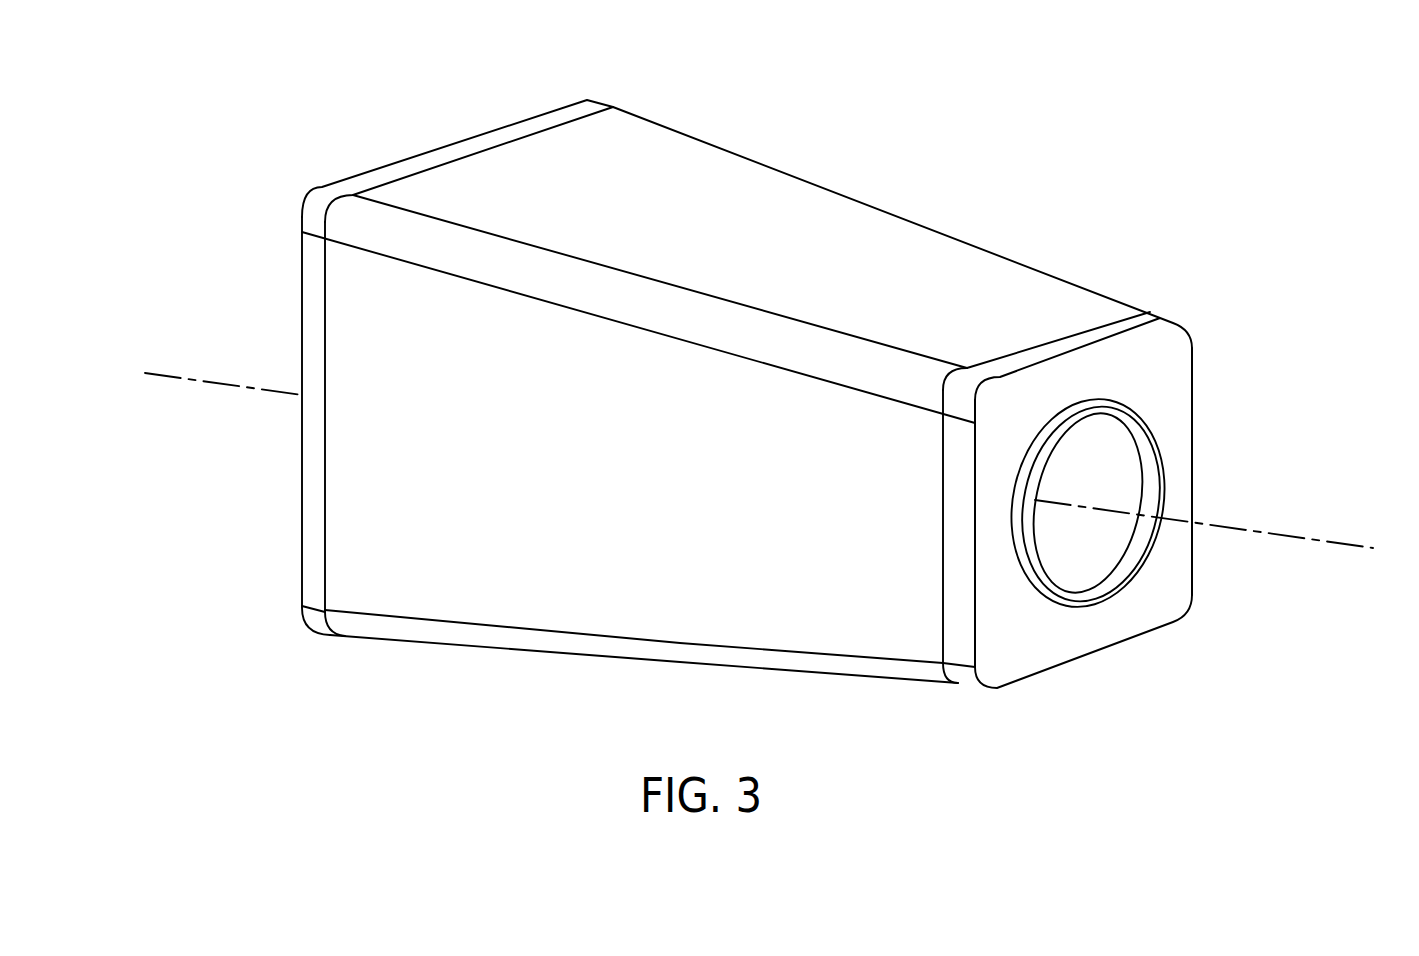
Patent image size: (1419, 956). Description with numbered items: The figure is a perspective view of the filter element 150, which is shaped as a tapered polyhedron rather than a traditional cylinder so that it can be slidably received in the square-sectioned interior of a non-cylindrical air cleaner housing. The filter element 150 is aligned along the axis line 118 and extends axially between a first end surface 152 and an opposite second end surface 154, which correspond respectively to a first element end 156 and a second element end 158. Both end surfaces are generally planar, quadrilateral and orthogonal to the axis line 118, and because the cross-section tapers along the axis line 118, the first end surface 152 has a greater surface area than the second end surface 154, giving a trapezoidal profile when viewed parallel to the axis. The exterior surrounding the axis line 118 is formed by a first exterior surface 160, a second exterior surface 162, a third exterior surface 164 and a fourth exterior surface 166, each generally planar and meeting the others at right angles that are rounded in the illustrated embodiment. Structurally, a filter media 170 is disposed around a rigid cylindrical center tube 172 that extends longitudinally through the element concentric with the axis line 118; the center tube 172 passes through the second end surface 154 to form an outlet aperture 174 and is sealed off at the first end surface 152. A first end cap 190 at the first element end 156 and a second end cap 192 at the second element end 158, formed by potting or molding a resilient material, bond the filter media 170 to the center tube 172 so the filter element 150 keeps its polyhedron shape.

The axis line 118 is at (1303, 537).
The filter element 150 is at (860, 177).
The first end surface 152 is at (302, 253).
The second end surface 154 is at (1192, 360).
The first element end 156 is at (350, 329).
The second element end 158 is at (928, 645).
The first exterior surface 160 is at (995, 288).
The second exterior surface 162 is at (828, 677).
The third exterior surface 164 is at (688, 562).
The fourth exterior surface 166 is at (1122, 298).
The filter media 170 is at (655, 312).
The center tube 172 is at (1088, 585).
The outlet aperture 174 is at (1122, 487).
The first end cap 190 is at (317, 536).
The second end cap 192 is at (962, 623).